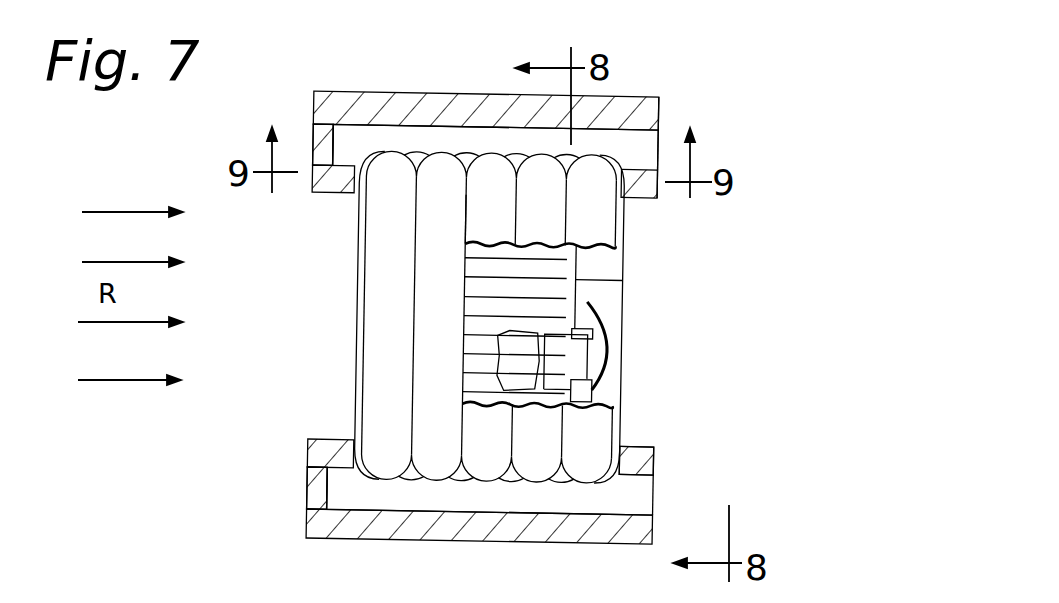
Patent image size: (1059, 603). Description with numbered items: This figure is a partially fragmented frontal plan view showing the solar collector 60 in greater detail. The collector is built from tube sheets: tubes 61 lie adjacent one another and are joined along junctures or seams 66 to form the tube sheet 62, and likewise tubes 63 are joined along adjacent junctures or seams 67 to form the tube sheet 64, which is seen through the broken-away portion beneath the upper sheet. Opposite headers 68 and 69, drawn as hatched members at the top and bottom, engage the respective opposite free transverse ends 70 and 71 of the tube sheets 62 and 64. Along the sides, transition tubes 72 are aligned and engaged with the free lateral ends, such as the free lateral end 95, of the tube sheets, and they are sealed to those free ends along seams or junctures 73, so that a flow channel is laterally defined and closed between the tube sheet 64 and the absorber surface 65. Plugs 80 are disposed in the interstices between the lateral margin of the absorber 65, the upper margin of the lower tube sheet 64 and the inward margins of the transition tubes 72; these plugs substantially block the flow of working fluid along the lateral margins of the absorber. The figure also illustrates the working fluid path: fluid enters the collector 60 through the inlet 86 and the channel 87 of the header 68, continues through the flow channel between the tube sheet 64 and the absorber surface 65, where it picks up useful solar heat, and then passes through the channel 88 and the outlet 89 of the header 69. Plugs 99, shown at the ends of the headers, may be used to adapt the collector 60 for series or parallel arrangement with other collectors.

The collector 60 is at (684, 73).
The tubes 61 is at (405, 278).
The tube sheet 62 is at (380, 346).
The tubes 63 is at (538, 367).
The tube sheet 64 is at (560, 378).
The absorber surface 65 is at (577, 290).
The junctures or seams 66 is at (465, 214).
The junctures or seams 67 is at (603, 347).
The header 68 is at (340, 92).
The header 69 is at (328, 541).
The free transverse end 70 is at (490, 160).
The free transverse end 71 is at (417, 158).
The transition tubes 72 is at (357, 390).
The seams or junctures 73 is at (363, 290).
The plugs 80 is at (593, 331).
The inlet 86 is at (660, 135).
The channel 87 is at (590, 138).
The channel 88 is at (573, 502).
The outlet 89 is at (656, 484).
The free lateral end 95 is at (622, 278).
The plugs 99 is at (317, 131).